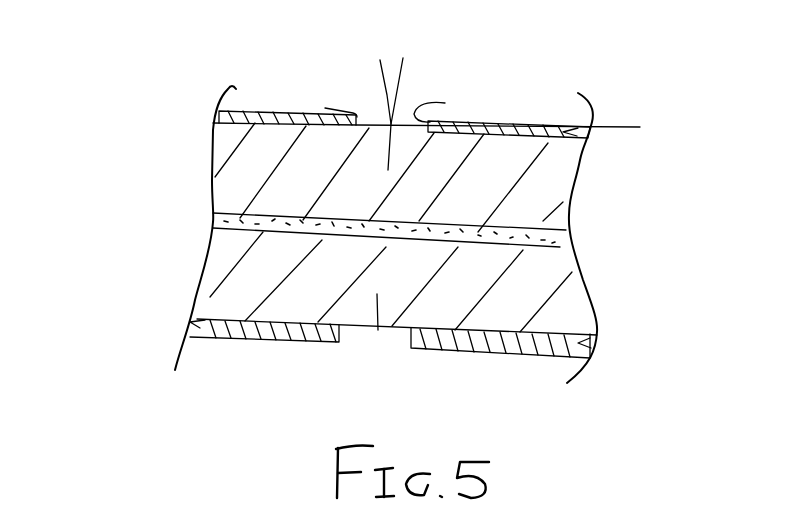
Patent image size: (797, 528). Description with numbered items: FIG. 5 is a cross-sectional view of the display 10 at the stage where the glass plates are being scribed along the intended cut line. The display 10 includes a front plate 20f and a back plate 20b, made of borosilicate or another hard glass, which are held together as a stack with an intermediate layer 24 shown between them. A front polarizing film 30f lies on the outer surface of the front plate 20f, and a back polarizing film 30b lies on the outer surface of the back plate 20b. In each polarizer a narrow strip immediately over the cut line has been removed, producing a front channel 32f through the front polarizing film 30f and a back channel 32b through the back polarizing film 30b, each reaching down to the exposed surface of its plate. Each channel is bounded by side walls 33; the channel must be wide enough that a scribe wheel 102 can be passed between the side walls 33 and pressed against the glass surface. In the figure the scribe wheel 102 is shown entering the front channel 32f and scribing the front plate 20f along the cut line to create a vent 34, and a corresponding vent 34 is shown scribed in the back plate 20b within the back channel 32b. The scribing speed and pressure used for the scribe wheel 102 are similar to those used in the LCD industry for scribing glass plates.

The display 10 is at (140, 225).
The front plate 20f is at (560, 183).
The back plate 20b is at (572, 300).
The adhesive layer 24 is at (562, 237).
The front polarizing film 30f is at (470, 119).
The back polarizing film 30b is at (583, 345).
The front channel 32f is at (369, 124).
The back channel 32b is at (416, 329).
The side walls of the channel 33 is at (380, 98).
The vent 34 is at (383, 153).
The scribe wheel 102 is at (412, 71).